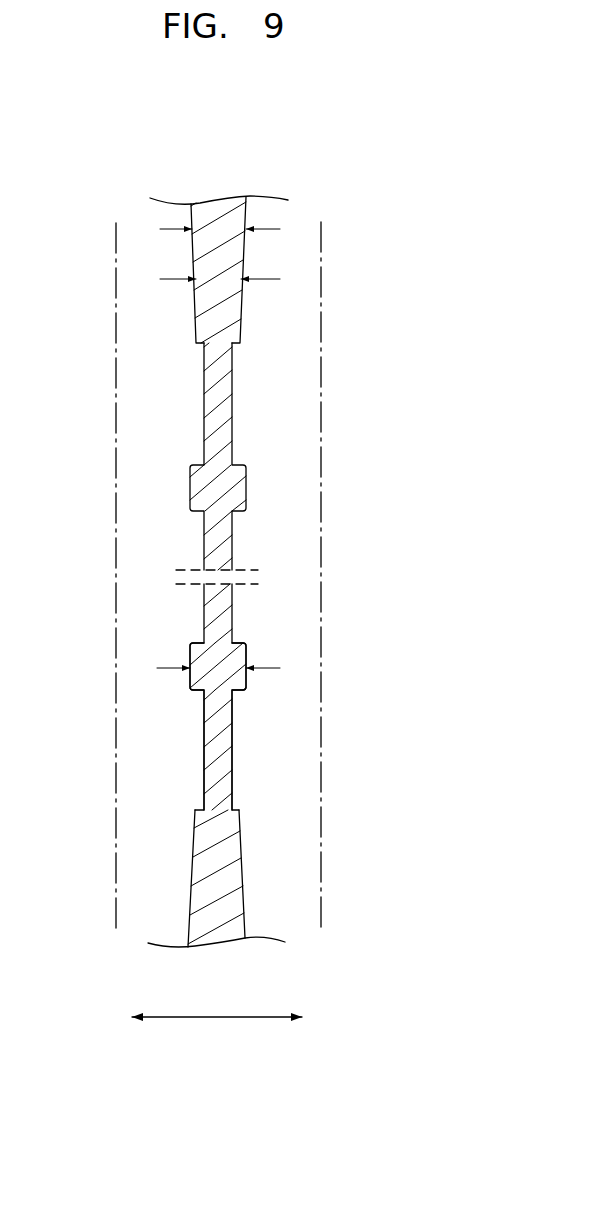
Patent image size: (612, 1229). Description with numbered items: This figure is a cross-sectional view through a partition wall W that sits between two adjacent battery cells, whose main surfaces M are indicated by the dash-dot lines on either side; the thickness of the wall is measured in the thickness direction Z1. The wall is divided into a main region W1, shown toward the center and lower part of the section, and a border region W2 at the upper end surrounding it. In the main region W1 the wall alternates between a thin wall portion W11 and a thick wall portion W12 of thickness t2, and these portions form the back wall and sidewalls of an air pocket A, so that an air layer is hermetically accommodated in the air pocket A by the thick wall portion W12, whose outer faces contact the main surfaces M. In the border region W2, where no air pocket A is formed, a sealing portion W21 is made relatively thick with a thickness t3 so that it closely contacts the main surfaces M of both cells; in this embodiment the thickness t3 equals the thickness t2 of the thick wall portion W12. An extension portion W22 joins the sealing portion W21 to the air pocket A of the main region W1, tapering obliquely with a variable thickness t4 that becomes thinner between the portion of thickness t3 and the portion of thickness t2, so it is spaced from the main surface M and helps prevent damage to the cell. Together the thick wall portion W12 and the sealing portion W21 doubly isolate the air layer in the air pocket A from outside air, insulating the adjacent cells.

The partition wall W is at (217, 187).
The border region W2 is at (412, 238).
The sealing portion W21 is at (246, 242).
The extension portion W22 is at (240, 308).
The air pocket A is at (232, 545).
The main region W1 is at (412, 678).
The thick wall portion W12 is at (231, 679).
The thin wall portion W11 is at (219, 749).
The thickness of sealing portion t3 is at (220, 229).
The variable thickness of extension portion t4 is at (220, 279).
The thickness of thick wall portion t2 is at (218, 668).
The main surface M is at (392, 440).
The thickness direction Z1 is at (217, 1030).